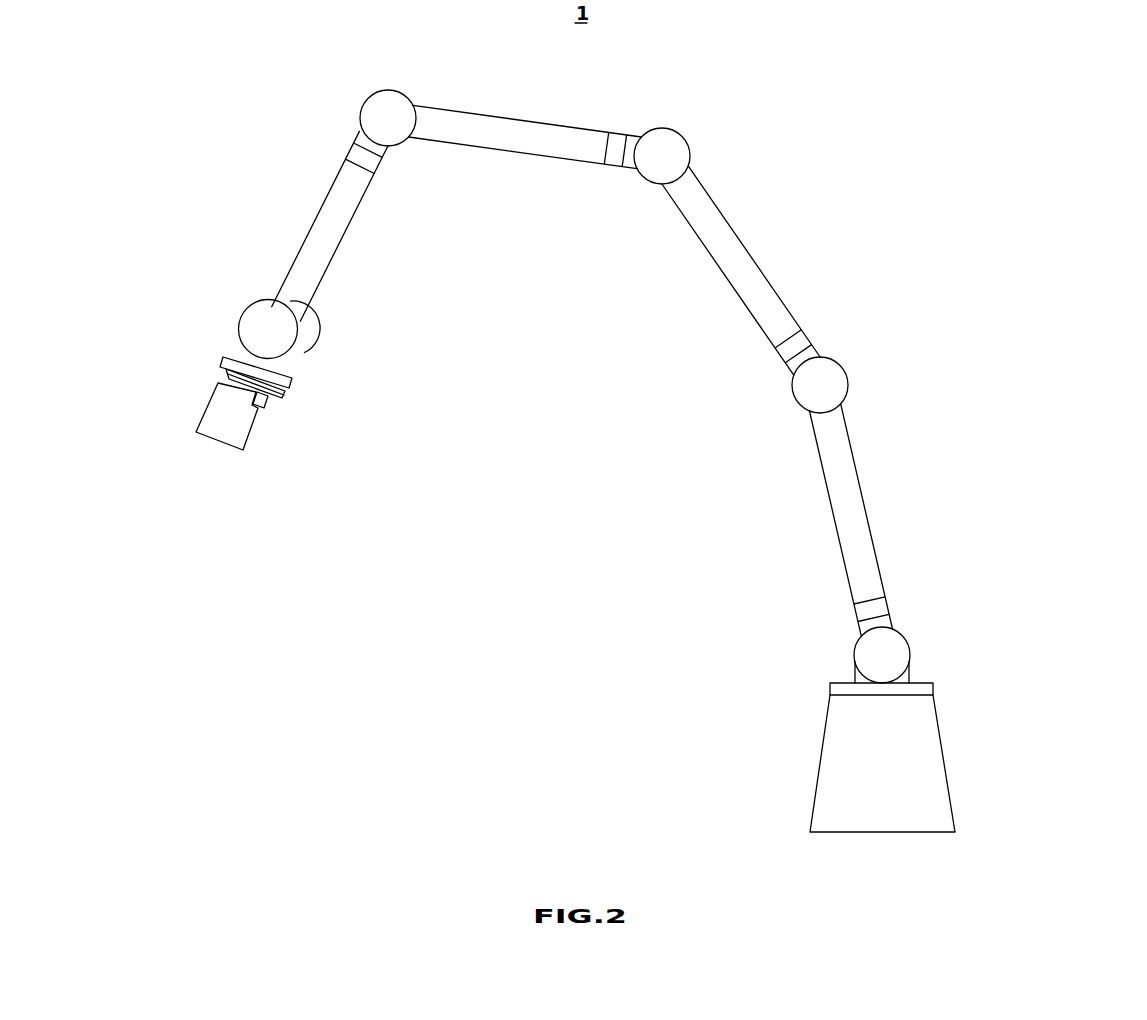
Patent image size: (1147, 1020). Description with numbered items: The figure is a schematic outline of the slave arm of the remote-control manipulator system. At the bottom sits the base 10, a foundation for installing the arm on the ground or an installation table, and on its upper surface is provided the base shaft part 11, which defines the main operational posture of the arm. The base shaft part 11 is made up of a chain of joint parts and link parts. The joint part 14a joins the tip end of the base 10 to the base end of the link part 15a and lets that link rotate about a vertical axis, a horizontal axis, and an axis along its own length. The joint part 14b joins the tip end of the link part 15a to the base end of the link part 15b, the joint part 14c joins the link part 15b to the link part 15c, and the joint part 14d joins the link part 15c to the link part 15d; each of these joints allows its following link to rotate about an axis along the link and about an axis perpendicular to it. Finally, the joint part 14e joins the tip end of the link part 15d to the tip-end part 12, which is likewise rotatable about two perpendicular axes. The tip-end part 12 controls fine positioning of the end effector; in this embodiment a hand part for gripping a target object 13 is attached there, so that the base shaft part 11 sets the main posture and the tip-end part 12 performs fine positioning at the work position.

The base 10 is at (965, 757).
The base shaft part 11 is at (723, 283).
The tip-end part 12 is at (332, 377).
The target object 13 is at (158, 416).
The joint part 14a is at (989, 655).
The joint part 14b is at (958, 385).
The joint part 14c is at (879, 156).
The joint part 14d is at (232, 118).
The joint part 14e is at (173, 329).
The link part 15a is at (967, 520).
The link part 15b is at (893, 270).
The link part 15c is at (525, 208).
The link part 15d is at (218, 241).